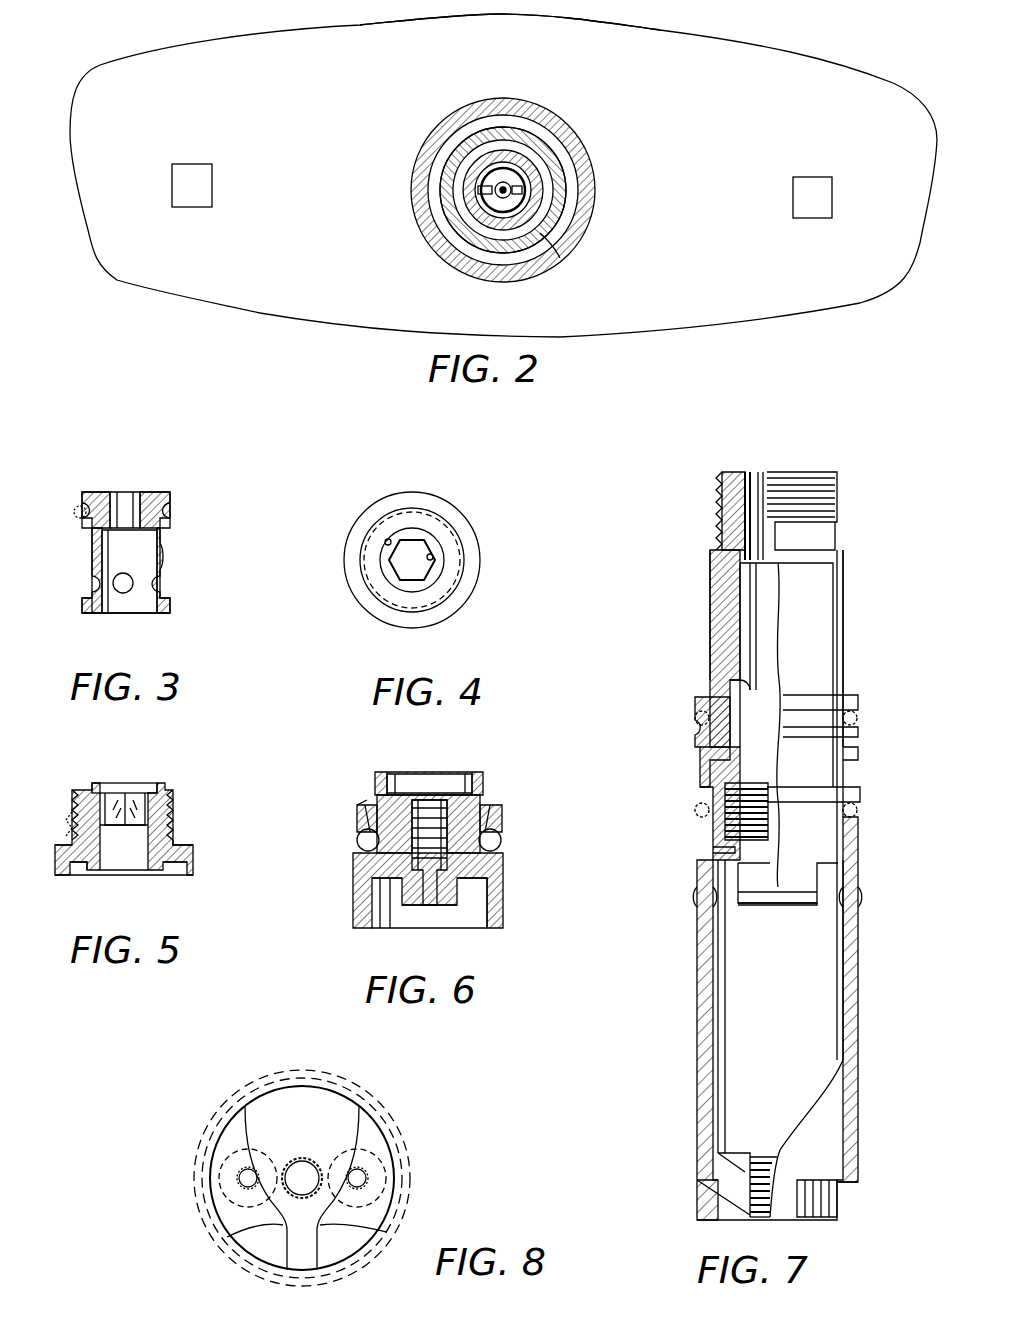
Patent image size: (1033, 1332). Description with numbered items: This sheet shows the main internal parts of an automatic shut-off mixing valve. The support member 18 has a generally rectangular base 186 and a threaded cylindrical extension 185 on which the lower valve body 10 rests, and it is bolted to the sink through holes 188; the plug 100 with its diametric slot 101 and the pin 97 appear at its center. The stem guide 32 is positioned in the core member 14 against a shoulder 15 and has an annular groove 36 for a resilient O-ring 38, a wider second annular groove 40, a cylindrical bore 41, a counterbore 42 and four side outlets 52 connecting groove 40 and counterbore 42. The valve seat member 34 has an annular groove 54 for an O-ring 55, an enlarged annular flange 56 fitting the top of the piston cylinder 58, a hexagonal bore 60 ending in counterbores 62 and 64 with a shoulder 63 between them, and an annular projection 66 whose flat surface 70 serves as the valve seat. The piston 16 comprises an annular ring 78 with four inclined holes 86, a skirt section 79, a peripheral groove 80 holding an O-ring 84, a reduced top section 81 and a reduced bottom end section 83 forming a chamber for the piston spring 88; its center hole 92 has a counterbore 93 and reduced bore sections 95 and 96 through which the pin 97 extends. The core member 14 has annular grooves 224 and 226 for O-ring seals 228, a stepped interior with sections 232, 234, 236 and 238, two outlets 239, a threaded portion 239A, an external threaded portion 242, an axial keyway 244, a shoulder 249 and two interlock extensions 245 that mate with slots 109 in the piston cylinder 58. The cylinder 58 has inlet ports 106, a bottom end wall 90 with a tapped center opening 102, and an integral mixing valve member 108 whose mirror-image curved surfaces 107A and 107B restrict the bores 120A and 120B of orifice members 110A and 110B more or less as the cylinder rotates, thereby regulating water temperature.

In FIG. 2, the lower valve body 10 is at (460, 250).
In FIG. 8, the lower valve body 10 is at (265, 1072).
In FIG. 7, the core member 14 is at (849, 631).
In FIG. 7, the shoulder 15 is at (730, 688).
In FIG. 6, the piston 16 is at (350, 908).
In FIG. 2, the valve support member 18 is at (300, 30).
In FIG. 3, the stem guide 32 is at (102, 486).
In FIG. 4, the valve seat member 34 is at (385, 513).
In FIG. 5, the valve seat member 34 is at (196, 863).
In FIG. 3, the annular groove 36 is at (172, 508).
In FIG. 3, the O-ring 38 is at (74, 512).
In FIG. 3, the second annular groove 40 is at (167, 543).
In FIG. 3, the cylindrical bore 41 is at (130, 500).
In FIG. 3, the cylindrical counterbore 42 is at (157, 610).
In FIG. 3, the side outlets 52 is at (97, 583).
In FIG. 5, the annular groove 54 is at (173, 840).
In FIG. 5, the O-ring 55 is at (68, 828).
In FIG. 4, the annular flange 56 is at (474, 591).
In FIG. 5, the annular flange 56 is at (58, 850).
In FIG. 2, the piston cylinder 58 is at (540, 233).
In FIG. 8, the piston cylinder 58 is at (210, 1157).
In FIG. 7, the piston cylinder 58 is at (861, 1017).
In FIG. 4, the hexagonal bore 60 is at (434, 557).
In FIG. 5, the hexagonal bore 60 is at (137, 808).
In FIG. 4, the cylindrical counterbore 62 is at (386, 542).
In FIG. 5, the cylindrical counterbore 62 is at (135, 786).
In FIG. 4, the shoulder 63 is at (413, 588).
In FIG. 5, the shoulder 63 is at (147, 790).
In FIG. 5, the cylindrical counterbore 64 is at (133, 858).
In FIG. 5, the annular projection 66 is at (162, 868).
In FIG. 5, the flat surface 70 is at (85, 873).
In FIG. 6, the annular ring 78 is at (362, 813).
In FIG. 6, the skirt section 79 is at (505, 907).
In FIG. 6, the peripheral groove 80 is at (499, 838).
In FIG. 6, the reduced diameter top section 81 is at (480, 782).
In FIG. 6, the reduced diameter bottom end section 83 is at (457, 897).
In FIG. 6, the O-ring 84 is at (501, 845).
In FIG. 6, the inclined holes 86 is at (367, 805).
In FIG. 2, the piston spring 88 is at (477, 182).
In FIG. 7, the bottom end wall 90 is at (745, 1157).
In FIG. 6, the center hole 92 is at (433, 798).
In FIG. 6, the counterbore 93 is at (460, 783).
In FIG. 6, the bore section 95 is at (388, 871).
In FIG. 6, the bore section 96 is at (425, 907).
In FIG. 2, the cylindrical pin 97 is at (503, 187).
In FIG. 2, the plug 100 is at (517, 203).
In FIG. 2, the diametric slot 101 is at (523, 177).
In FIG. 8, the center opening 102 is at (302, 1160).
In FIG. 7, the center opening 102 is at (753, 1200).
In FIG. 7, the inlet ports 106 is at (702, 900).
In FIG. 8, the curved surface 107A is at (280, 1225).
In FIG. 8, the curved surface 107B is at (322, 1225).
In FIG. 8, the mixing valve member 108 is at (348, 1112).
In FIG. 7, the mixing valve member 108 is at (838, 1193).
In FIG. 7, the interlock keyway slots 109 is at (783, 897).
In FIG. 8, the orifice member 110A is at (235, 1148).
In FIG. 8, the orifice member 110B is at (380, 1150).
In FIG. 8, the bore 120A is at (363, 1178).
In FIG. 8, the bore 120B is at (248, 1178).
In FIG. 2, the cylindrical extension 185 is at (423, 227).
In FIG. 2, the rectangular base 186 is at (618, 9).
In FIG. 2, the holes 188 is at (192, 168).
In FIG. 7, the annular groove 224 is at (817, 717).
In FIG. 7, the annular groove 226 is at (812, 808).
In FIG. 7, the O-ring seals 228 is at (695, 719).
In FIG. 7, the interior section 232 is at (757, 503).
In FIG. 7, the interior section 234 is at (770, 597).
In FIG. 7, the interior section (tapped bore) 236 is at (753, 707).
In FIG. 7, the interior section 238 is at (730, 850).
In FIG. 7, the outlets 239 is at (728, 760).
In FIG. 7, the threaded portion 239A is at (727, 825).
In FIG. 7, the threaded portion 242 is at (830, 500).
In FIG. 7, the axial keyway 244 is at (713, 557).
In FIG. 7, the interlock extensions 245 is at (797, 877).
In FIG. 7, the shoulder 249 is at (843, 550).